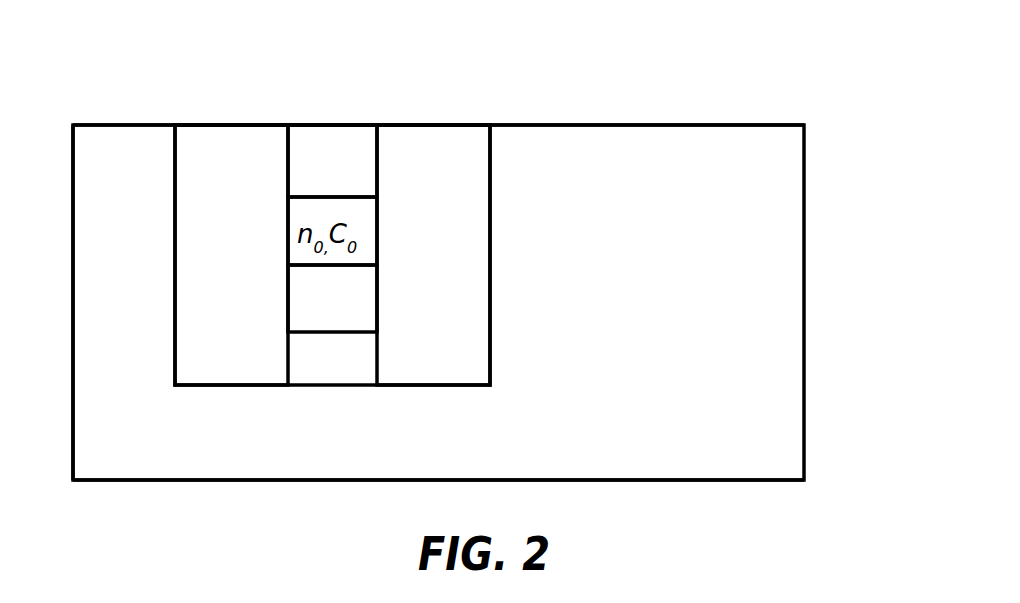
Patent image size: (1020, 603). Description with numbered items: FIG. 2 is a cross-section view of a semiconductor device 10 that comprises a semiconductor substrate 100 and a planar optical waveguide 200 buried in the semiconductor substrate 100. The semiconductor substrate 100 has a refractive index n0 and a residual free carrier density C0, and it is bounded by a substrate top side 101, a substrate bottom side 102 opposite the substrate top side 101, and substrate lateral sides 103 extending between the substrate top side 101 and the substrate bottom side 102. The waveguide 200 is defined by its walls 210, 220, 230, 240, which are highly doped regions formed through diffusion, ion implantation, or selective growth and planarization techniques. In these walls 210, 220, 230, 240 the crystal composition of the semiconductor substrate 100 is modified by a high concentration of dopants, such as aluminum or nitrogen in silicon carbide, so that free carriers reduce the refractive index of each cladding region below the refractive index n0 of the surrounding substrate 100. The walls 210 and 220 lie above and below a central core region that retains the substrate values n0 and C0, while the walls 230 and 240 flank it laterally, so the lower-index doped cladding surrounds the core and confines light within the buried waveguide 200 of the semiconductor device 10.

The semiconductor device 10 is at (840, 54).
The semiconductor substrate 100 is at (784, 189).
The substrate top side 101 is at (706, 124).
The substrate bottom side 102 is at (635, 482).
The substrate lateral sides 103 is at (72, 315).
The planar optical waveguide 200 is at (150, 100).
The wall of the waveguide 210 is at (338, 138).
The wall of the waveguide 220 is at (331, 322).
The wall of the waveguide 230 is at (190, 302).
The wall of the waveguide 240 is at (480, 292).